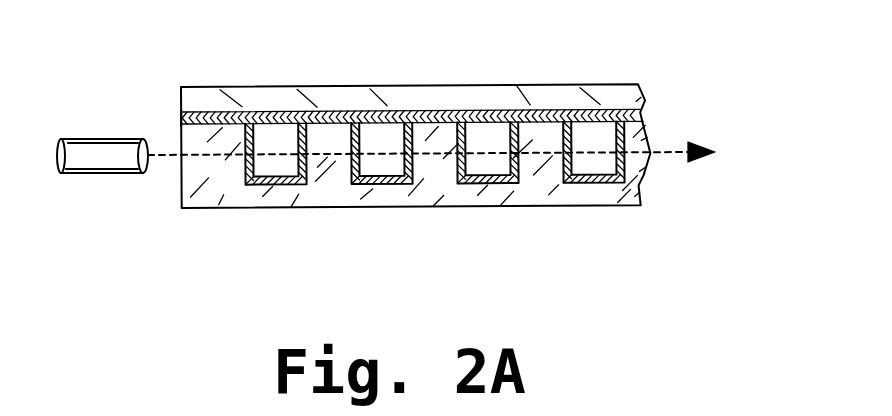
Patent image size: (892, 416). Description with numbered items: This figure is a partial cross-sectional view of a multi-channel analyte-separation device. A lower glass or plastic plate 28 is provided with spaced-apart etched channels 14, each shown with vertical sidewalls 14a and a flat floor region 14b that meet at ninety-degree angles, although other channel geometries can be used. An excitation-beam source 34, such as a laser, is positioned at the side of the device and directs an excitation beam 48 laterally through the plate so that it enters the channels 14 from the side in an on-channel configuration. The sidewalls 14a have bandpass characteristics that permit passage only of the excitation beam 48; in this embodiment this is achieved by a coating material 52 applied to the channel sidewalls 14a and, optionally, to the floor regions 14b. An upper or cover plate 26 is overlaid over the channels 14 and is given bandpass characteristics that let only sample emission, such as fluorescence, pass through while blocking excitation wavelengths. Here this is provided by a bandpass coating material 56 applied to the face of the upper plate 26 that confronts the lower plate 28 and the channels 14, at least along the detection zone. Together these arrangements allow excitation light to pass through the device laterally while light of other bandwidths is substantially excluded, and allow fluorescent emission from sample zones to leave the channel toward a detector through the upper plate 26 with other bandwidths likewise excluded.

The etched channels 14 is at (485, 130).
The vertical sidewalls 14a is at (423, 160).
The floor region 14b is at (593, 183).
The upper plate 26 is at (222, 97).
The lower plate 28 is at (222, 203).
The excitation-beam source 34 is at (105, 138).
The excitation beam 48 is at (167, 157).
The coating material 52 is at (602, 112).
The bandpass coating material 56 is at (180, 115).